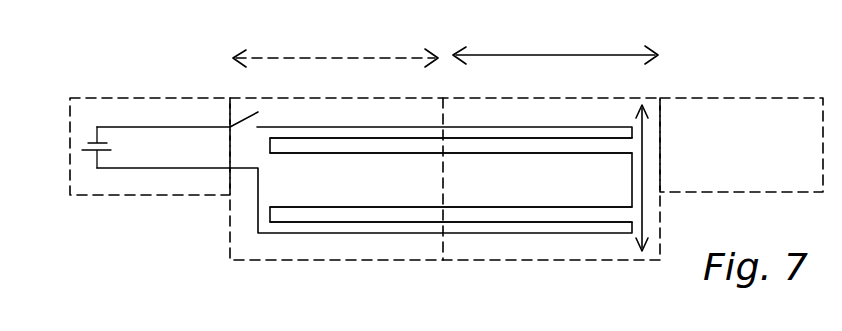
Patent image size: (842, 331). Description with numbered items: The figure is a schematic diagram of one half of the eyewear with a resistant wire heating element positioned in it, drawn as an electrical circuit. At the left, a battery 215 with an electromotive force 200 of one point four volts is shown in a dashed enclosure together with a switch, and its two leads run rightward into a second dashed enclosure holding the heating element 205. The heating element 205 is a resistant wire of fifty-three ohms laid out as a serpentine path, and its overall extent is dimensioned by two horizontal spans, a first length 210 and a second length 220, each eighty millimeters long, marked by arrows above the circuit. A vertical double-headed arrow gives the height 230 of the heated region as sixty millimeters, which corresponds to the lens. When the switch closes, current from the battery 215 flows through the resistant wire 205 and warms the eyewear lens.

The voltage source 200 is at (124, 147).
The resistant wire heating element 205 is at (445, 179).
The first heating element length 210 is at (333, 55).
The battery 215 is at (150, 163).
The second heating element length 220 is at (549, 53).
The heating element height 230 is at (643, 168).